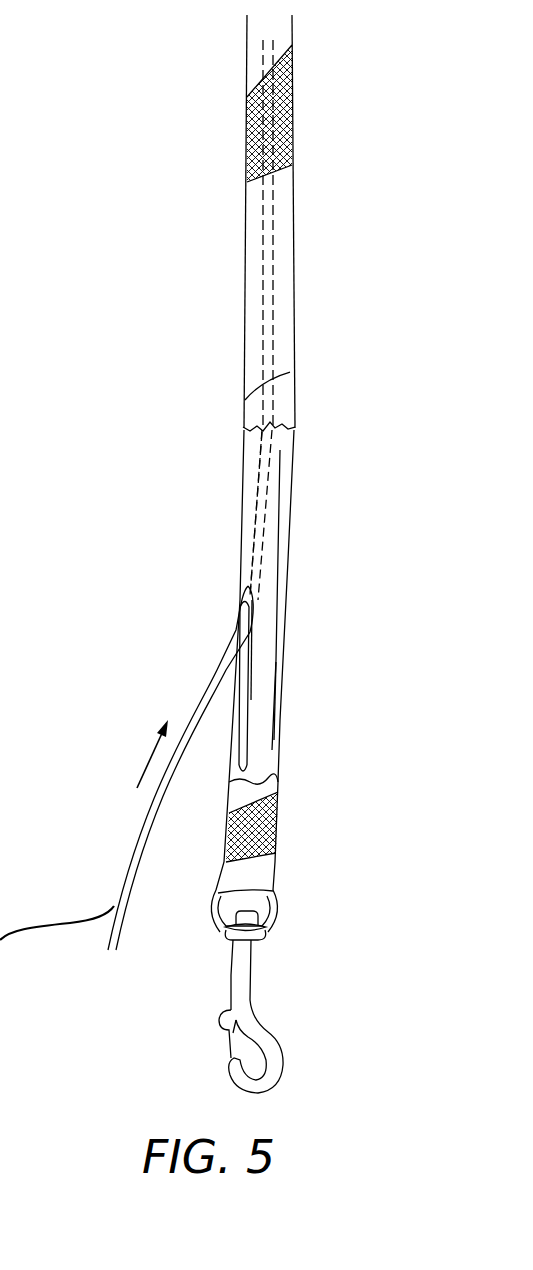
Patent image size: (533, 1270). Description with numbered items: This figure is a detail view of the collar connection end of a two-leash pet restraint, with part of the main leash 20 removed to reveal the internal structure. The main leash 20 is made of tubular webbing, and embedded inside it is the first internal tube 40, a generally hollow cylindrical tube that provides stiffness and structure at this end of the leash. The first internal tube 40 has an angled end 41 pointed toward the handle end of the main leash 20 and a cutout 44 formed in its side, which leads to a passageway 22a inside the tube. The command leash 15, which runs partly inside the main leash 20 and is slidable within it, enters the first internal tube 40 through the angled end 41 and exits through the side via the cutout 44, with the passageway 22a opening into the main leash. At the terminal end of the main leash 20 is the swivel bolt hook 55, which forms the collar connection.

The main leash 20 is at (247, 245).
The command leash 15 is at (256, 503).
The angled end 41 is at (283, 373).
The passageway 22a is at (268, 592).
The first internal tube 40 is at (268, 703).
The cutout 44 is at (233, 762).
The swivel bolt hook 55 is at (270, 938).